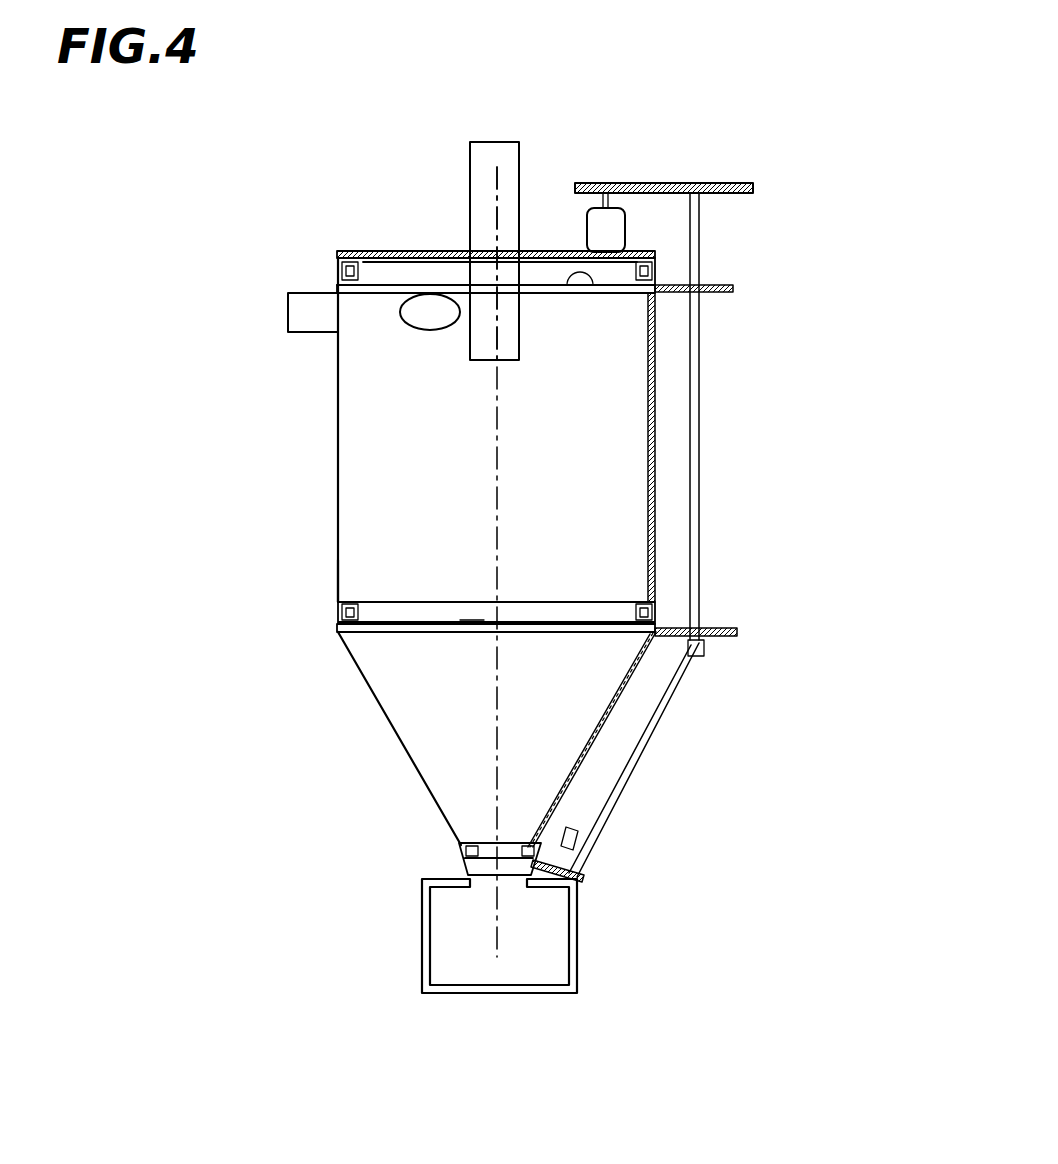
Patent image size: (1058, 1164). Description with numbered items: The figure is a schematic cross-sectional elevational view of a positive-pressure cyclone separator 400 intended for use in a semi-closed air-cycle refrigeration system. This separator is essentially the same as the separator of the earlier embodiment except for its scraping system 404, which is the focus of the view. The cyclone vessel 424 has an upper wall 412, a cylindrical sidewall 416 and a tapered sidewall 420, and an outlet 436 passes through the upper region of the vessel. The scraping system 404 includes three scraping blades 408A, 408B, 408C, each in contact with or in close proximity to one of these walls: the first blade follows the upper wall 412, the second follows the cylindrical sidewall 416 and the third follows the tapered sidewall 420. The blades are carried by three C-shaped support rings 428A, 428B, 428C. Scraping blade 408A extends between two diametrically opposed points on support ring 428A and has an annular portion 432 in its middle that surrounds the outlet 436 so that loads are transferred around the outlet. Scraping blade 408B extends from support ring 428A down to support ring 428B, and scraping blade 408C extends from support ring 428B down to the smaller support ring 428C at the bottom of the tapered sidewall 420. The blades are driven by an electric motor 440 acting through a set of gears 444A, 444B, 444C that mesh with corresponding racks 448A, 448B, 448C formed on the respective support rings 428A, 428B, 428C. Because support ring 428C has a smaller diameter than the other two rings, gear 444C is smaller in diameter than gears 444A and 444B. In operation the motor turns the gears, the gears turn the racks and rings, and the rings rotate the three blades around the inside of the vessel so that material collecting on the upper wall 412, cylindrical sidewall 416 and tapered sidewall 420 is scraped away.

The positive-pressure cyclone separator 400 is at (790, 204).
The scraping system 404 is at (628, 476).
The scraping blade 408A is at (415, 262).
The scraping blade 408B is at (655, 401).
The scraping blade 408C is at (595, 765).
The upper wall 412 is at (442, 250).
The cylindrical sidewall 416 is at (340, 503).
The tapered sidewall 420 is at (378, 697).
The cyclone vessel 424 is at (333, 587).
The C-shaped support ring 428A is at (373, 252).
The C-shaped support ring 428B is at (404, 596).
The C-shaped support ring 428C is at (515, 856).
The annular portion 432 is at (505, 258).
The outlet 436 is at (507, 142).
The electric motor 440 is at (626, 230).
The gear 444A is at (720, 292).
The gear 444B is at (730, 638).
The gear 444C is at (580, 873).
The rack 448A is at (567, 288).
The rack 448B is at (472, 620).
The rack 448C is at (478, 838).